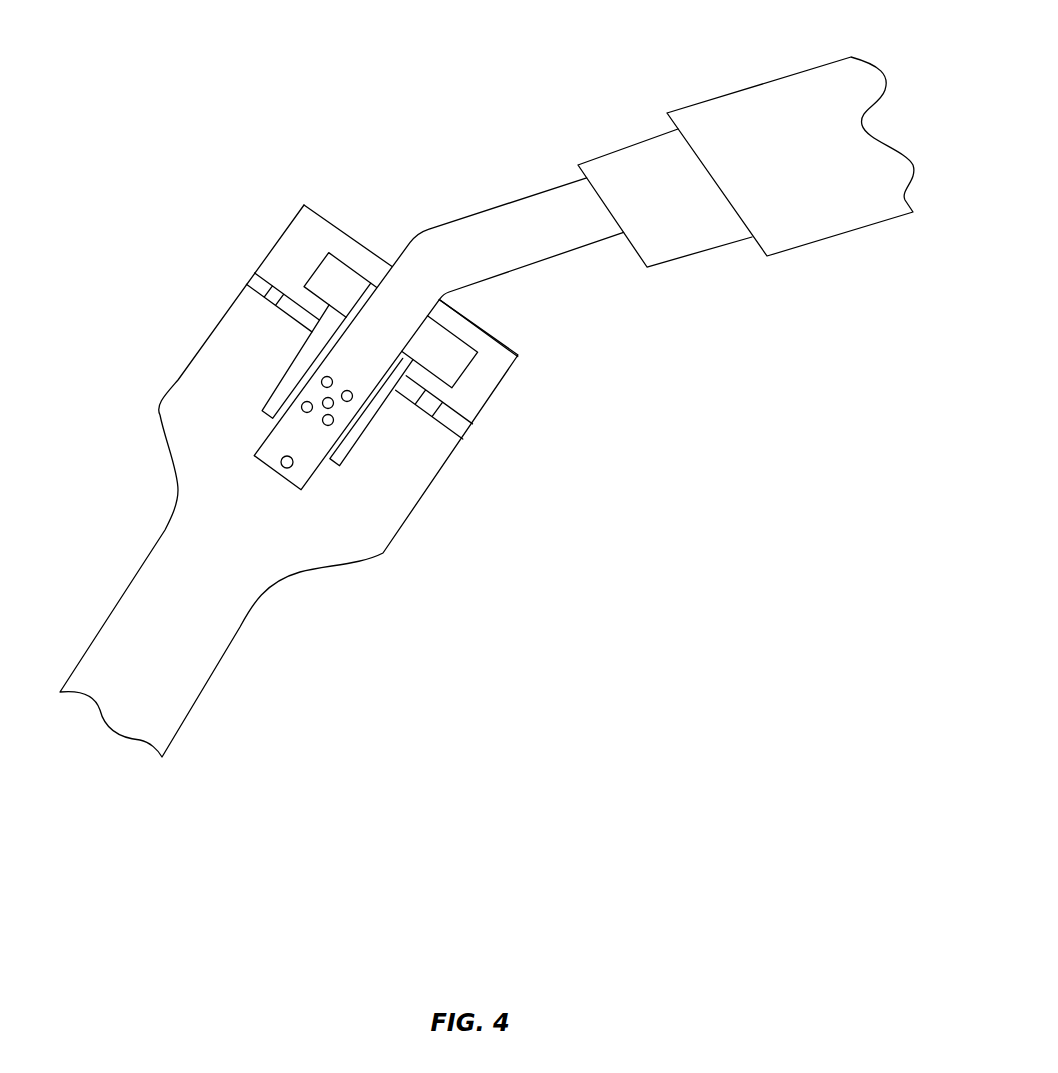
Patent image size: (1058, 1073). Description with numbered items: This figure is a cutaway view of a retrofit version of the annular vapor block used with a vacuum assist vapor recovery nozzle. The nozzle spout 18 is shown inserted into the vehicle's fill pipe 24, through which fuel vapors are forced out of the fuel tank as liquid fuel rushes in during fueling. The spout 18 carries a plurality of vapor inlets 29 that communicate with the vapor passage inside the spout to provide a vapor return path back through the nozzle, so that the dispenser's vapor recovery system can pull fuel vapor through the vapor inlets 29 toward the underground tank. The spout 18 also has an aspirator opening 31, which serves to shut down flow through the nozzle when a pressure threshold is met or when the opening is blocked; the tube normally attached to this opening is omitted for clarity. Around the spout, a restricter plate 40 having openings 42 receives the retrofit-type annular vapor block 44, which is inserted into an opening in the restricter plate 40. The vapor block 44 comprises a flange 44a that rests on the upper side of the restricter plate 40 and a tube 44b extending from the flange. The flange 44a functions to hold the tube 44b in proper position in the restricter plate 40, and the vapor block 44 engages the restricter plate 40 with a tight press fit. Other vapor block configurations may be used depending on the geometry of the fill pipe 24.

The spout 18 is at (504, 286).
The fill pipe 24 is at (398, 567).
The vapor inlets 29 is at (344, 418).
The aspirator opening 31 is at (267, 473).
The restricter plate 40 is at (231, 274).
The openings 42 is at (259, 278).
The annular vapor block 44 is at (279, 360).
The flange 44a is at (468, 368).
The tube 44b is at (380, 413).